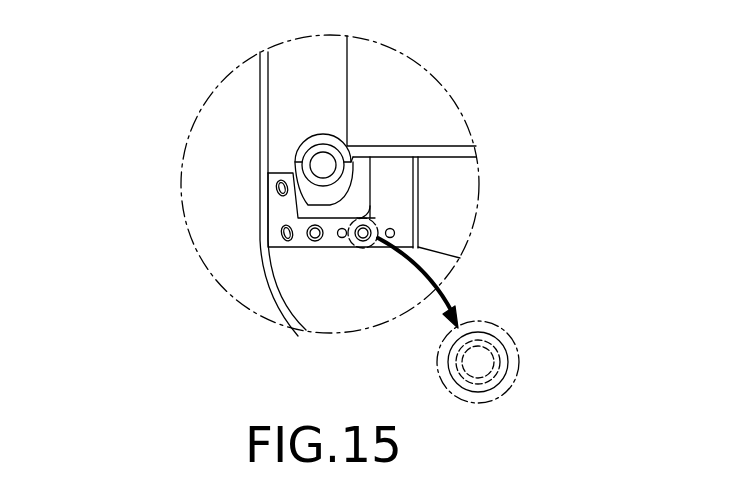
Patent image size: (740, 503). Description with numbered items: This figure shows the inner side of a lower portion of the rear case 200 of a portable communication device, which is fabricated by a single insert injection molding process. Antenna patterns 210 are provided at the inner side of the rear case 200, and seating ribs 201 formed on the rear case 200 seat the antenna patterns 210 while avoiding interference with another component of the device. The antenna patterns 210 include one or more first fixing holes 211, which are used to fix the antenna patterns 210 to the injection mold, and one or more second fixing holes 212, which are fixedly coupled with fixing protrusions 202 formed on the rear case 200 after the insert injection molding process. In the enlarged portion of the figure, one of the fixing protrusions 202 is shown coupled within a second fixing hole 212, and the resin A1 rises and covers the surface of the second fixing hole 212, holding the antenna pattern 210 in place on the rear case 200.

The rear case 200 is at (262, 127).
The antenna patterns 210 is at (396, 146).
The seating ribs 201 is at (418, 200).
The first fixing holes 211 is at (350, 226).
The second fixing holes 212 is at (315, 241).
The fixing protrusions 202 is at (482, 362).
The resin A1 is at (500, 330).